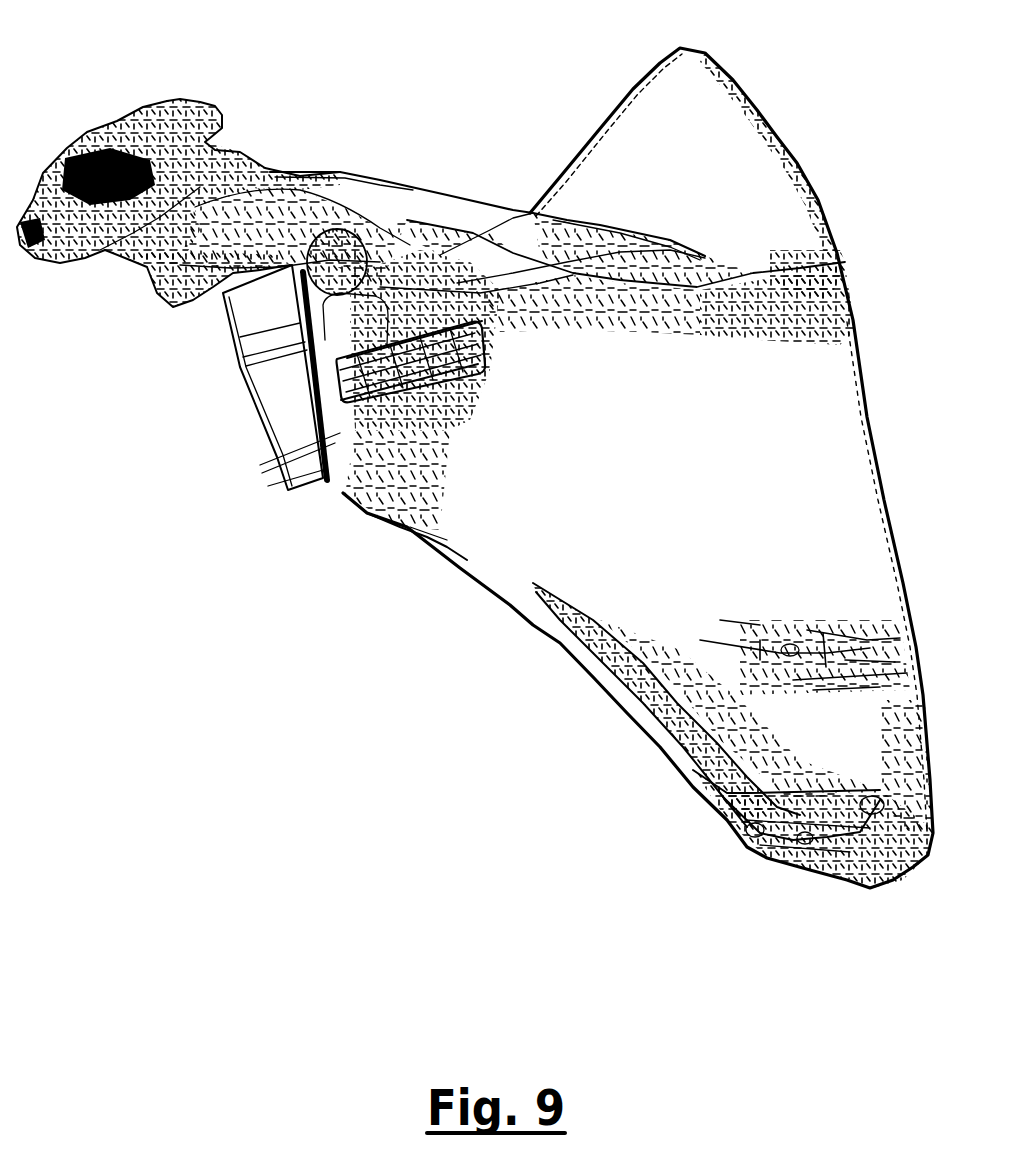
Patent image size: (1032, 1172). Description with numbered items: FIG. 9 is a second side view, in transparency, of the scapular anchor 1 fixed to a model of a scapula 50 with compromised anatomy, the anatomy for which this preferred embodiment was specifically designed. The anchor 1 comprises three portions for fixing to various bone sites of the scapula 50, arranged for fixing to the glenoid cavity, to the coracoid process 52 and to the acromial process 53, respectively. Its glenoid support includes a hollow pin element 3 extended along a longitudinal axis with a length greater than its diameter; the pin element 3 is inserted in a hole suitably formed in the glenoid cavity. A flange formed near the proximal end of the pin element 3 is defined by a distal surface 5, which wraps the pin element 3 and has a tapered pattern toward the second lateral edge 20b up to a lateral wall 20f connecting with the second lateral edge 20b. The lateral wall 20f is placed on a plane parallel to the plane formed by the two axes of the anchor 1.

The scapula 50 is at (786, 76).
The acromial process 53 is at (358, 192).
The coracoid process 52 is at (176, 302).
The distal surface 5 is at (405, 216).
The anchor 1 is at (256, 510).
The lateral wall 20f is at (283, 380).
The second lateral edge 20b is at (270, 437).
The pin element 3 is at (447, 367).